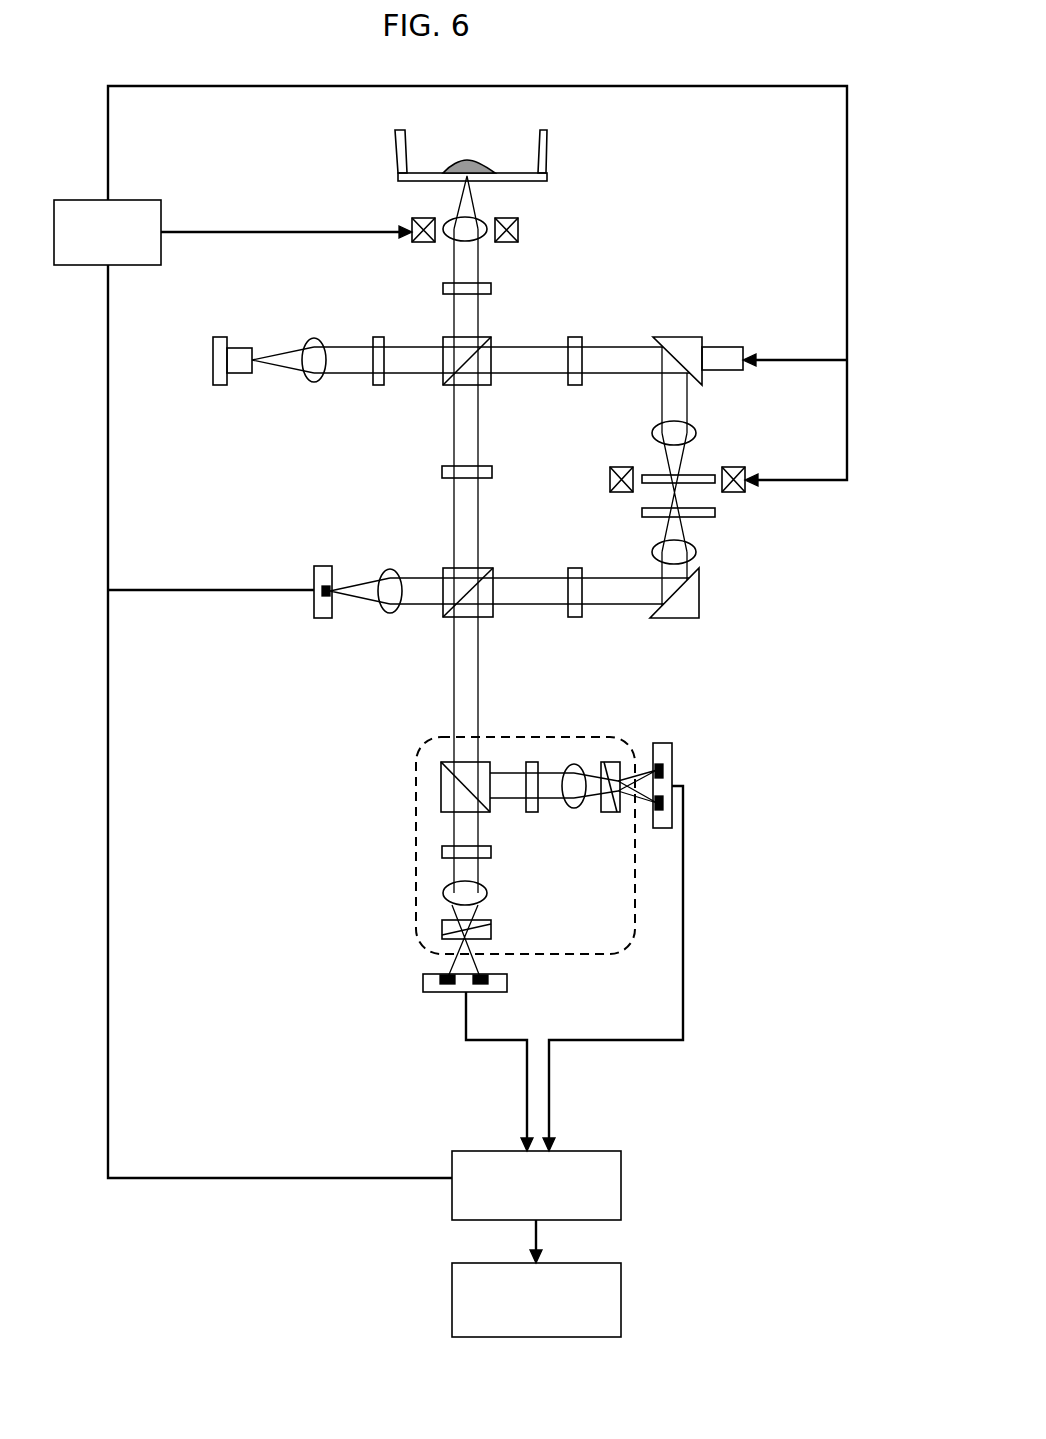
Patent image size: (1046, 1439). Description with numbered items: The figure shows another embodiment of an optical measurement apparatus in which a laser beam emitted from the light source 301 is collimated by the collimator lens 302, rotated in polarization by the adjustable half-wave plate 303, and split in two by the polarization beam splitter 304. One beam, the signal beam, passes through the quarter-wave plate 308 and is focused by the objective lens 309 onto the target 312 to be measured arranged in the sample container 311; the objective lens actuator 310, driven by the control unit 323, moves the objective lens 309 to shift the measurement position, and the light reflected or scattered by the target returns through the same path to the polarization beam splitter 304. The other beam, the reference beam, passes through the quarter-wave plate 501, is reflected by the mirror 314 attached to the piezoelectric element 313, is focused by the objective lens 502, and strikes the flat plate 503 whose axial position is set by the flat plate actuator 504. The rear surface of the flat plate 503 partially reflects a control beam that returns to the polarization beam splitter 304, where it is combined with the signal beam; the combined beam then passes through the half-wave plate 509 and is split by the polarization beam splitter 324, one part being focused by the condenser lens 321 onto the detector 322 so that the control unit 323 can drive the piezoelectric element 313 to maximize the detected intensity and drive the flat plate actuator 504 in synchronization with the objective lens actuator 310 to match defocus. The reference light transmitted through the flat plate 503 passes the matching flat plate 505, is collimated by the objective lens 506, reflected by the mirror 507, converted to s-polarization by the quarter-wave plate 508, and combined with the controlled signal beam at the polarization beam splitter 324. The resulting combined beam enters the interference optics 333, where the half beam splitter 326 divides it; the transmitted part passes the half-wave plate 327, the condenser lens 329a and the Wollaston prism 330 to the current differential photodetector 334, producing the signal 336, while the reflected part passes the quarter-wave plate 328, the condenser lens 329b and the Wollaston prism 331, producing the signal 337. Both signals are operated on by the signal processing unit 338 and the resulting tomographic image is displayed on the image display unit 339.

The light source 301 is at (217, 337).
The collimator lens 302 is at (312, 338).
The λ/2 plate 303 is at (378, 386).
The polarization beam splitter 304 is at (482, 337).
The λ/4 plate 308 is at (443, 288).
The objective lens 309 is at (487, 221).
The objective lens actuator 310 is at (520, 231).
The sample container 311 is at (548, 150).
The target to be measured 312 is at (472, 160).
The piezoelectric element 313 is at (735, 346).
The mirror 314 is at (675, 335).
The condenser lens 321 is at (390, 569).
The detector 322 is at (320, 566).
The control unit 323 is at (158, 200).
The polarization beam splitter 324 is at (488, 568).
The half beam splitter 326 is at (441, 781).
The λ/2 plate 327 is at (492, 852).
The λ/4 plate 328 is at (531, 762).
The condenser lens 329a is at (488, 892).
The condenser lens 329b is at (574, 762).
The Wollaston prism 330 is at (492, 929).
The Wollaston prism 331 is at (612, 762).
The interference optics 333 is at (416, 888).
The current differential photodetector 334 is at (508, 984).
The signal 336 is at (467, 1020).
The signal 337 is at (690, 818).
The signal processing unit 338 is at (604, 1151).
The image display unit 339 is at (604, 1263).
The λ/4 plate 501 is at (578, 337).
The objective lens 502 is at (697, 431).
The flat plate 503 is at (660, 475).
The flat plate actuator 504 is at (745, 466).
The flat plate 505 is at (716, 512).
The objective lens 506 is at (696, 552).
The mirror 507 is at (700, 598).
The λ/4 plate 508 is at (578, 568).
The λ/2 plate 509 is at (492, 466).